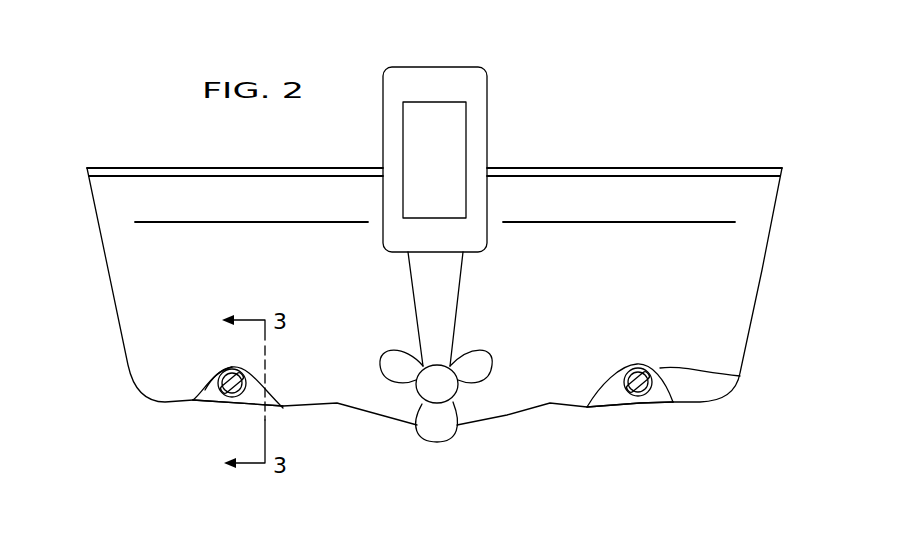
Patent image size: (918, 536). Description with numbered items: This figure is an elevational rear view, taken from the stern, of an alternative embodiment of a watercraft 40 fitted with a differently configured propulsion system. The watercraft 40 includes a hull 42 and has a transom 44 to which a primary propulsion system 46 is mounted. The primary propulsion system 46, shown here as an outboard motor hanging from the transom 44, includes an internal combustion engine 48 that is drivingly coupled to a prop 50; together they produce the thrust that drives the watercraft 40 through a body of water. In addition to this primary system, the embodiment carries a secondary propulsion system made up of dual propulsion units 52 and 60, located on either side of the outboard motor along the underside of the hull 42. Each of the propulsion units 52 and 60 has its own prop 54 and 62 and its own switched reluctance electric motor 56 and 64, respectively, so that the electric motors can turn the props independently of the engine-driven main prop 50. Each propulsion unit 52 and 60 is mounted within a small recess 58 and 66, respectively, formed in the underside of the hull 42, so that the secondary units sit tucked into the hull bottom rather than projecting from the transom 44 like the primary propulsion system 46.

The watercraft 40 is at (148, 114).
The hull 42 is at (493, 420).
The transom 44 is at (712, 281).
The primary propulsion system 46 is at (487, 198).
The internal combustion engine 48 is at (428, 101).
The prop 50 is at (457, 397).
The propulsion unit 52 is at (262, 402).
The prop 54 is at (213, 393).
The switched reluctance electric motor 56 is at (232, 407).
The recess 58 is at (263, 383).
The propulsion unit 60 is at (666, 401).
The prop 62 is at (600, 390).
The switched reluctance electric motor 64 is at (642, 403).
The recess 66 is at (740, 376).